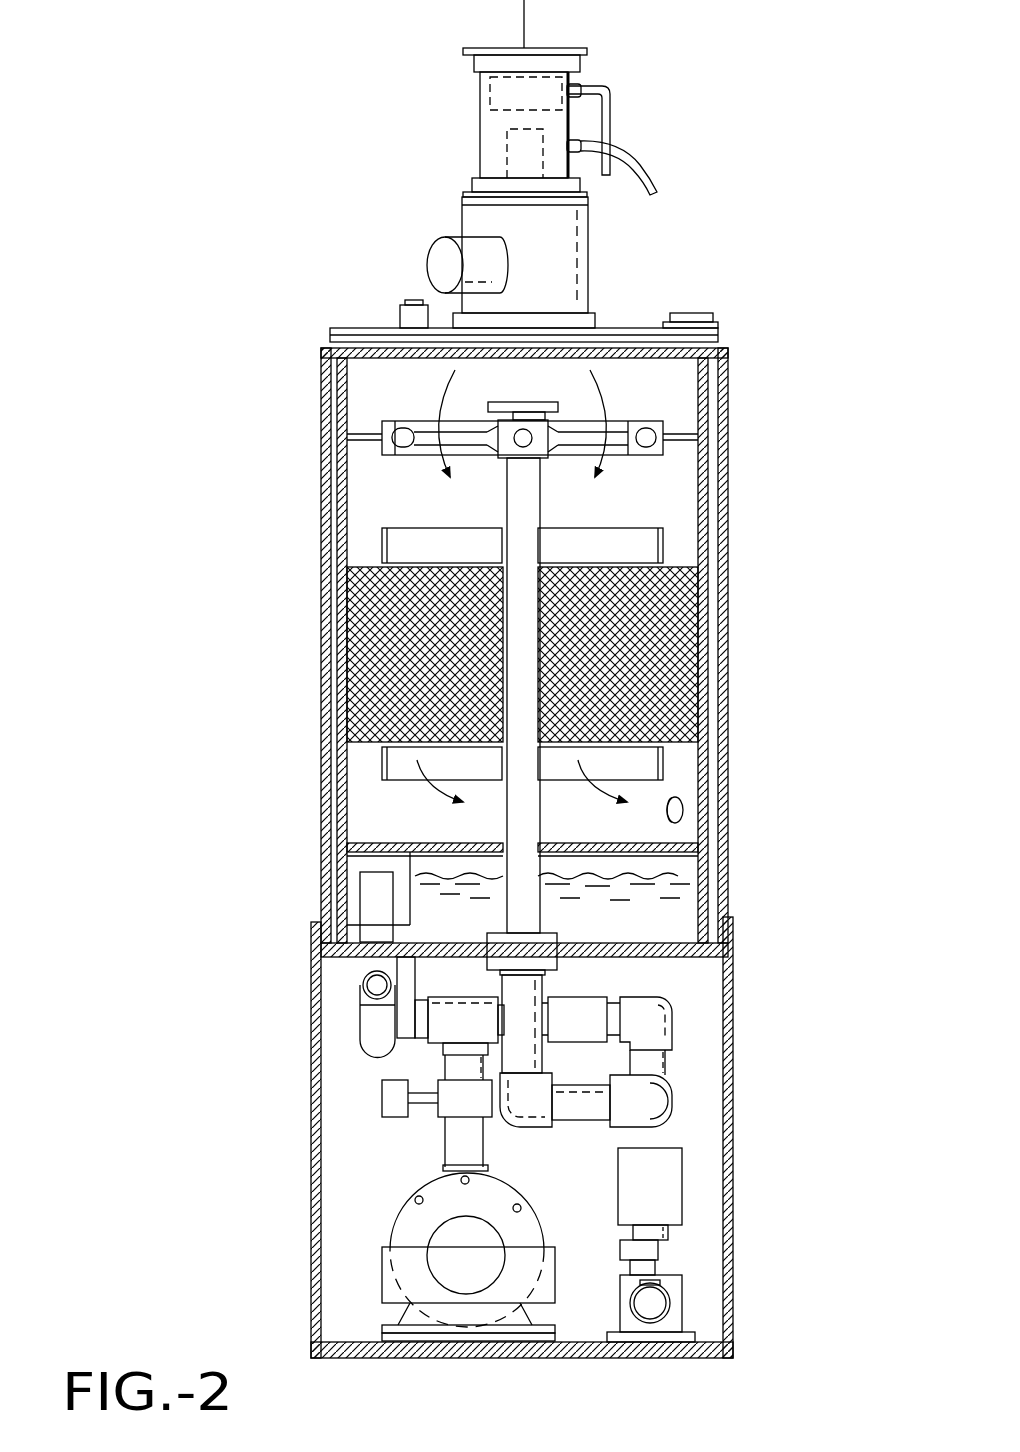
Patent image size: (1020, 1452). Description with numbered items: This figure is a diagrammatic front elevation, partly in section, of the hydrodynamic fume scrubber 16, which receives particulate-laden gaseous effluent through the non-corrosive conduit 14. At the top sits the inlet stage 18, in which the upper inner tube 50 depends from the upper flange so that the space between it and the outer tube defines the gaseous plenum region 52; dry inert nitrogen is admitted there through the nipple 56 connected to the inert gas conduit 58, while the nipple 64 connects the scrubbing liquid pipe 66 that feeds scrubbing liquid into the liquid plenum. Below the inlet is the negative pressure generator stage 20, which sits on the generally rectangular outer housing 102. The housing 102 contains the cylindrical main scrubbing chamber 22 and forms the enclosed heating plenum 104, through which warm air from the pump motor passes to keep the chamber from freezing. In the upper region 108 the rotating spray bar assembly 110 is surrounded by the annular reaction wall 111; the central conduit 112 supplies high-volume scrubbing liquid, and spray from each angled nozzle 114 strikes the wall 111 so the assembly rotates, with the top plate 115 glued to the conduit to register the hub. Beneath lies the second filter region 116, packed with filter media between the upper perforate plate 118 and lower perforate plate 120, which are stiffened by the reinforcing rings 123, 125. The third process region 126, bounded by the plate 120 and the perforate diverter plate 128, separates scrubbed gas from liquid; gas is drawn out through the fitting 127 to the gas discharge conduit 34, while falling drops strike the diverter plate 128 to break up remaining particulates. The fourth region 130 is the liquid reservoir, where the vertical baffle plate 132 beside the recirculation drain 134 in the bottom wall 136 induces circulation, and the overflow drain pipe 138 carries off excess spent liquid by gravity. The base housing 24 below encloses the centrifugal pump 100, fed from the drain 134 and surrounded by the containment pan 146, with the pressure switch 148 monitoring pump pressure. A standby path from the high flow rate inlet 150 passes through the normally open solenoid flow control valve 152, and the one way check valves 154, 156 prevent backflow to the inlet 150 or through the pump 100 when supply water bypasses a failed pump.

The non-corrosive conduit 14 is at (528, 17).
The hydrodynamic fume scrubber 16 is at (200, 1205).
The inlet stage 18 is at (480, 160).
The negative pressure generator stage 20 is at (560, 268).
The main scrubbing chamber 22 is at (668, 513).
The base housing 24 is at (735, 988).
The gas discharge conduit 34 is at (690, 313).
The upper inner tube 50 is at (497, 90).
The gaseous plenum region 52 is at (512, 123).
The nipple 56 is at (582, 88).
The inert gas conduit 58 is at (613, 100).
The nipple 64 is at (588, 145).
The scrubbing liquid pipe 66 is at (645, 165).
The centrifugal pump 100 is at (495, 1190).
The outer housing 102 is at (718, 675).
The heating plenum 104 is at (716, 405).
The upper region 108 is at (448, 516).
The rotating spray bar assembly 110 is at (392, 425).
The annular reaction wall 111 is at (663, 450).
The central conduit 112 is at (525, 503).
The nozzle 114 is at (407, 446).
The top plate 115 is at (500, 402).
The second filter region 116 is at (688, 613).
The upper perforate plate 118 is at (575, 567).
The lower perforate plate 120 is at (440, 748).
The reinforcing ring 123 is at (663, 545).
The reinforcing ring 125 is at (665, 755).
The third process region 126 is at (420, 826).
The fitting 127 is at (688, 808).
The perforate diverter plate 128 is at (557, 845).
The fourth region 130 is at (727, 873).
The vertical baffle plate 132 is at (490, 912).
The recirculation drain 134 is at (410, 935).
The bottom wall 136 is at (580, 960).
The overflow drain pipe 138 is at (358, 980).
The containment pan 146 is at (540, 1283).
The pressure switch 148 is at (380, 1108).
The high flow rate inlet 150 is at (645, 1322).
The solenoid flow control valve 152 is at (680, 1295).
The one way check valve 154 is at (655, 1185).
The one way check valve 156 is at (600, 1034).